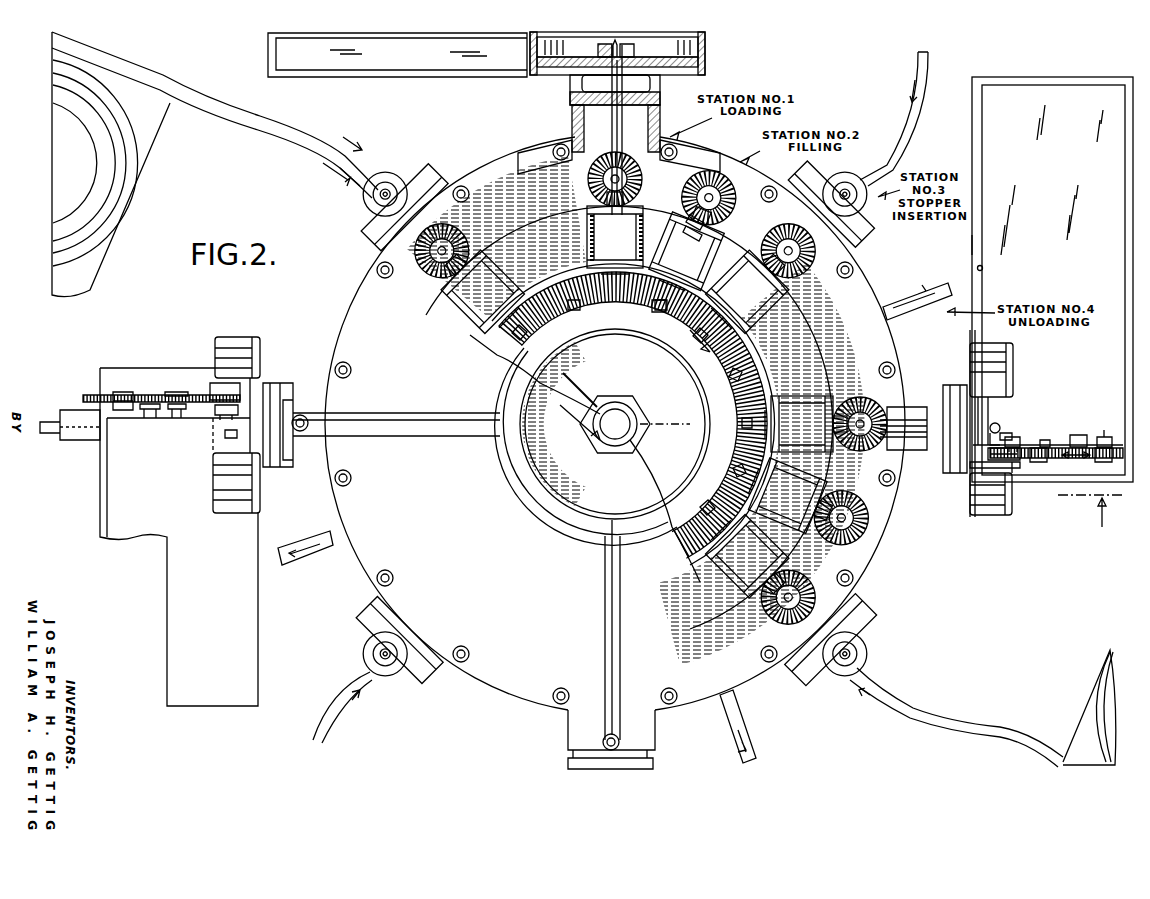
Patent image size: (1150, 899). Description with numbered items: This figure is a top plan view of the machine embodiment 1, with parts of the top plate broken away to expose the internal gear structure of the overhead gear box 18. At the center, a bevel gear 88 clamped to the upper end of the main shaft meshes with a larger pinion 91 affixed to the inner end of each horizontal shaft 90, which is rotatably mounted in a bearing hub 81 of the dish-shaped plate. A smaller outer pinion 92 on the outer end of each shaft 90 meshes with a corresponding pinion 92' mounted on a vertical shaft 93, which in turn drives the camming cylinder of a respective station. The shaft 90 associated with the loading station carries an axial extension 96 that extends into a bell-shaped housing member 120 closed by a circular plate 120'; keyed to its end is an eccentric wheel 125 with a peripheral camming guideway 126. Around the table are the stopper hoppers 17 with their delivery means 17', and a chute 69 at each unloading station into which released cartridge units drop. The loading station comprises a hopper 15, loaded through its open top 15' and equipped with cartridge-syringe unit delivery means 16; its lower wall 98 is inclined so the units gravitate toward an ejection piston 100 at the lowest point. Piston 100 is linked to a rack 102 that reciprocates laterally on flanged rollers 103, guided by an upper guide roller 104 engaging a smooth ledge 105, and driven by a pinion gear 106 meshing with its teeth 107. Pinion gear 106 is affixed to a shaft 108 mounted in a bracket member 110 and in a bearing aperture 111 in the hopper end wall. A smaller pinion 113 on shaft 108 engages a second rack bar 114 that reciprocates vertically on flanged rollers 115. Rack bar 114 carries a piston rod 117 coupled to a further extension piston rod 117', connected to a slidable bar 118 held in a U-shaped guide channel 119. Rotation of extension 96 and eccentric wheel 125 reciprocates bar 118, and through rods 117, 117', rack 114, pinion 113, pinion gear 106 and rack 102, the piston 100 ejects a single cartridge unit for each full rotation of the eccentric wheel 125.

The embodiment of the invention 1 is at (724, 343).
The hopper 15 is at (957, 245).
The open top 15' is at (961, 267).
The cartridge-syringe unit delivery means 16 is at (1072, 385).
The hopper 17 is at (584, 398).
The delivery means 17' is at (557, 399).
The overhead gear box 18 is at (612, 481).
The chute 69 is at (745, 720).
The bearing hub 81 is at (677, 230).
The bevel gear 88 is at (740, 377).
The horizontal shaft 90 is at (612, 256).
The larger pinion 91 is at (656, 310).
The smaller outer pinion 92 is at (720, 232).
The pinion 92' is at (725, 218).
The vertical shaft 93 is at (711, 195).
The axial extension 96 is at (619, 132).
The lower wall 98 is at (1068, 95).
The ejection piston 100 is at (80, 440).
The rack 102 is at (85, 397).
The flanged rollers 103 is at (124, 393).
The upper guide roller 104 is at (170, 410).
The smooth ledge 105 is at (143, 410).
The pinion gear 106 is at (998, 456).
The teeth 107 is at (1076, 466).
The shaft 108 is at (1015, 470).
The bracket member 110 is at (990, 468).
The bearing aperture 111 is at (1015, 437).
The smaller pinion 113 is at (1046, 440).
The second rack bar 114 is at (1010, 434).
The flanged rollers 115 is at (990, 440).
The piston rod 117 is at (1016, 413).
The further extension piston rod 117' is at (640, 48).
The slidable bar 118 is at (606, 48).
The guide channel 119 is at (576, 78).
The housing member 120 is at (631, 112).
The circular plate 120' is at (637, 53).
The eccentric wheel 125 is at (700, 68).
The camming guideway 126 is at (560, 58).